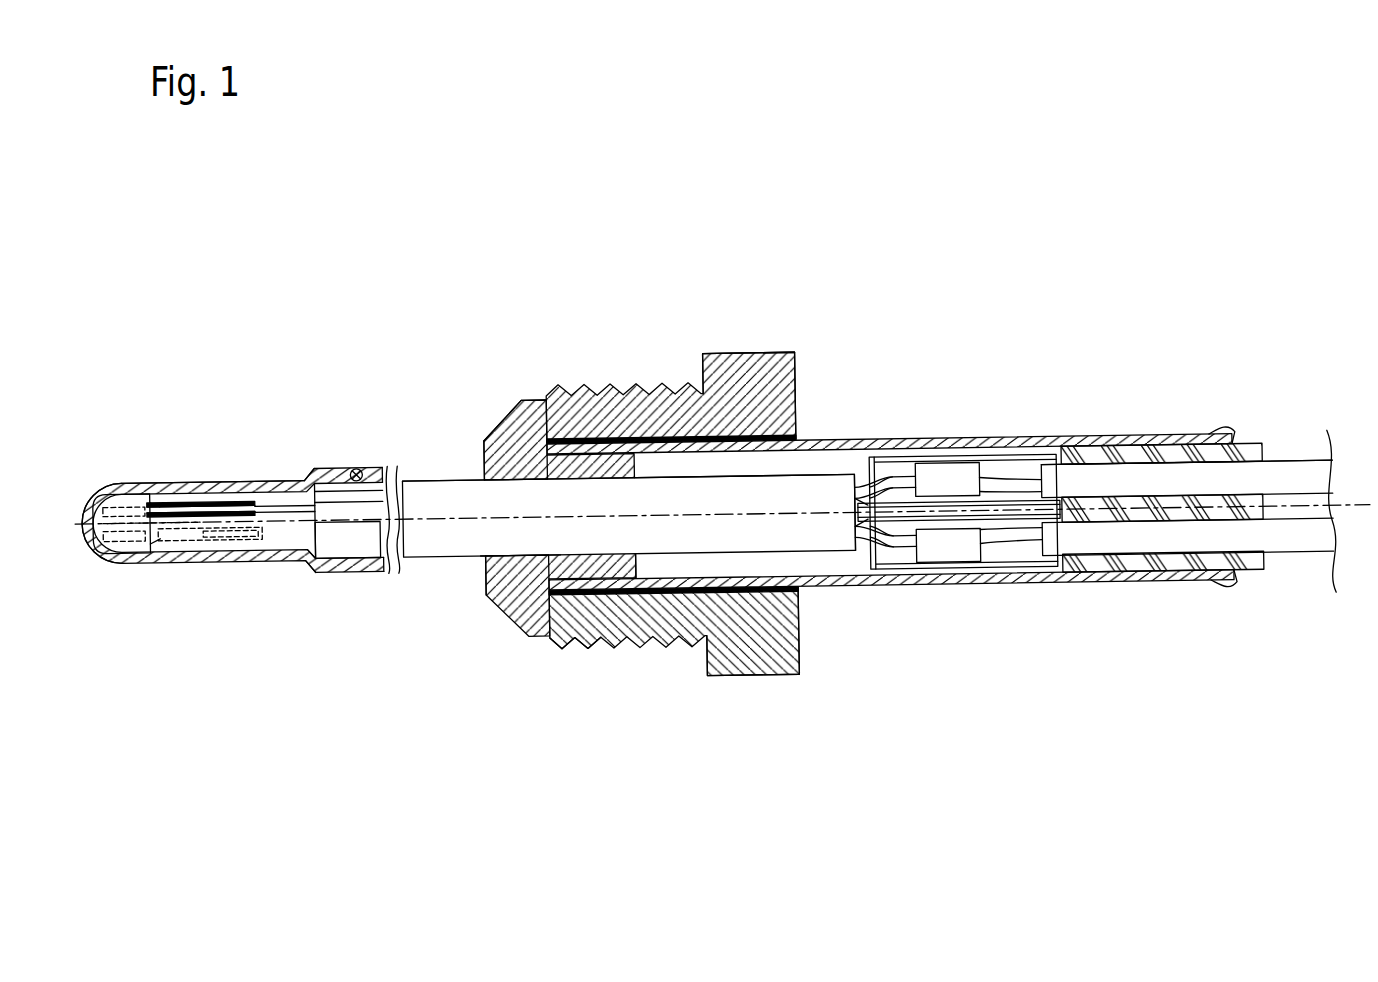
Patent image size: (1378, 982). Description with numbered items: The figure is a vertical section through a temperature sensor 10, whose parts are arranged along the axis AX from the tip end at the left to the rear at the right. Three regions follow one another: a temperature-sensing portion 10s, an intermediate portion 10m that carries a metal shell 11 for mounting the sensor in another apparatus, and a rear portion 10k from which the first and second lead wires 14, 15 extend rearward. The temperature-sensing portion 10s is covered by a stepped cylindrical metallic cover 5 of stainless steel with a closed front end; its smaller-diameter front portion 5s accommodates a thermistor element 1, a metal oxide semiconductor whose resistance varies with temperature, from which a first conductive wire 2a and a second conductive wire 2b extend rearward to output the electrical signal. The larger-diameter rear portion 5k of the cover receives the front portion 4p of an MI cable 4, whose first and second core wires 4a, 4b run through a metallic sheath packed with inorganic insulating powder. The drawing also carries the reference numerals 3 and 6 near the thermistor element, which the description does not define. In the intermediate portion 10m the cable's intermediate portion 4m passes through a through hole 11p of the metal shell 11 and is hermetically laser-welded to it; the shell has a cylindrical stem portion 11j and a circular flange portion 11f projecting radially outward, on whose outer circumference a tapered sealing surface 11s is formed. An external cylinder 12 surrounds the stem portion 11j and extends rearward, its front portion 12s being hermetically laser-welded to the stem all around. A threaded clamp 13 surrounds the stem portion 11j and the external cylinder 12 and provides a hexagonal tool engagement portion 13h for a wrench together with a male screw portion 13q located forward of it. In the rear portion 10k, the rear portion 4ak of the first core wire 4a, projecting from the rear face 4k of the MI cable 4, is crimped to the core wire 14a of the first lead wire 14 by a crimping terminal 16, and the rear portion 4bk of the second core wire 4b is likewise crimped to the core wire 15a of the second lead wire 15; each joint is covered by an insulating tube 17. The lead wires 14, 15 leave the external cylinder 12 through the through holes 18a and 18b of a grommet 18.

The thermistor element 1 is at (93, 483).
The first conductive wire 2a is at (173, 497).
The second conductive wire 2b is at (177, 547).
The insulating tube 3 is at (222, 495).
The MI cable 4 is at (425, 488).
The first core wire 4a is at (273, 507).
The second core wire 4b is at (266, 553).
The rear portion of first core wire 4ak is at (905, 478).
The rear portion of second core wire 4bk is at (905, 555).
The rear face of MI cable 4k is at (853, 558).
The intermediate portion of MI cable 4m is at (523, 533).
The front portion of MI cable 4p is at (317, 577).
The metallic cover 5 is at (337, 543).
The rear portion of metallic cover 5k is at (318, 465).
The front portion of metallic cover 5s is at (108, 561).
The filler / holder 6 is at (147, 503).
The temperature sensor 10 is at (783, 234).
The temperature-sensing portion 10s is at (315, 318).
The intermediate portion 10m is at (607, 282).
The rear portion 10k is at (1097, 332).
The metal shell 11 is at (485, 596).
The flange portion 11f is at (522, 420).
The sealing surface 11s is at (508, 434).
The through hole 11p is at (465, 492).
The stem portion 11j is at (600, 568).
The external cylinder 12 is at (838, 440).
The front portion of external cylinder 12s is at (603, 436).
The threaded clamp 13 is at (598, 622).
The tool engagement portion 13h is at (749, 380).
The male screw portion 13q is at (573, 645).
The first lead wire 14 is at (1115, 483).
The core wire of first lead wire 14a is at (1003, 478).
The second lead wire 15 is at (1082, 545).
The core wire of second lead wire 15a is at (1005, 555).
The crimping terminal 16 is at (952, 480).
The insulating tube 17 is at (1030, 460).
The grommet 18 is at (1205, 580).
The through hole of grommet 18a is at (1250, 468).
The through hole of grommet 18b is at (1254, 578).
The axis AX is at (412, 527).